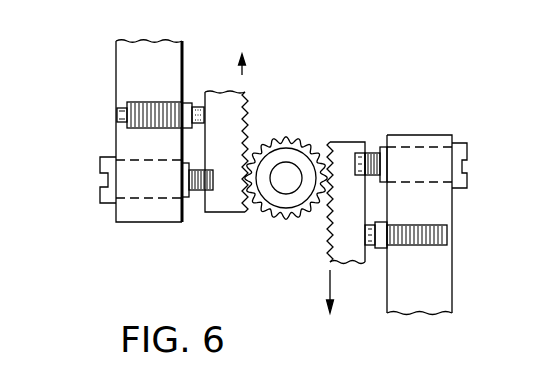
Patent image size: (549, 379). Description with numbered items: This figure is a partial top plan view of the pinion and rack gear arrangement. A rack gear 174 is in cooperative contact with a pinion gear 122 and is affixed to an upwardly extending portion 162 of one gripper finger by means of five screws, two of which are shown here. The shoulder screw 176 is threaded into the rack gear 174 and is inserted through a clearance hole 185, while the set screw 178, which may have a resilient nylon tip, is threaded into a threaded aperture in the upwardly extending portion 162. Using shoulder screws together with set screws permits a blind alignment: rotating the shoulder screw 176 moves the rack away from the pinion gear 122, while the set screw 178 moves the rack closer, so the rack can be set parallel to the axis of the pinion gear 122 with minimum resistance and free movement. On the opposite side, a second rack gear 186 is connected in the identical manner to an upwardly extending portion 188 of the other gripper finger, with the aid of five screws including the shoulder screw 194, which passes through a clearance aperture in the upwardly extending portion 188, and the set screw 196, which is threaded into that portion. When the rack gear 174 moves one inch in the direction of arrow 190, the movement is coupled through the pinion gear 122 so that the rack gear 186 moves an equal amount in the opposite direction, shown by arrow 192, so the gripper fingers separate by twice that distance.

The pinion gear 122 is at (285, 155).
The upwardly extending portion 162 is at (438, 286).
The rack gear 174 is at (342, 142).
The shoulder screw 176 is at (468, 150).
The set screw 178 is at (434, 220).
The clearance hole 185 is at (415, 151).
The rack gear 186 is at (217, 98).
The upwardly extending portion 188 is at (128, 66).
The arrow 190 is at (330, 285).
The arrow 192 is at (243, 73).
The shoulder screw 194 is at (100, 203).
The set screw 196 is at (114, 100).